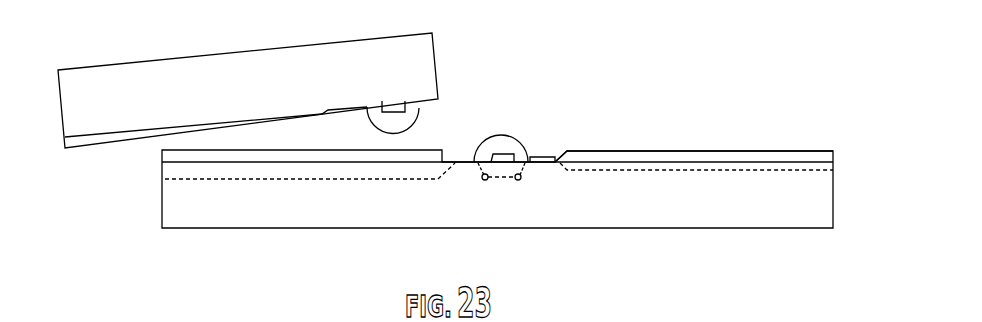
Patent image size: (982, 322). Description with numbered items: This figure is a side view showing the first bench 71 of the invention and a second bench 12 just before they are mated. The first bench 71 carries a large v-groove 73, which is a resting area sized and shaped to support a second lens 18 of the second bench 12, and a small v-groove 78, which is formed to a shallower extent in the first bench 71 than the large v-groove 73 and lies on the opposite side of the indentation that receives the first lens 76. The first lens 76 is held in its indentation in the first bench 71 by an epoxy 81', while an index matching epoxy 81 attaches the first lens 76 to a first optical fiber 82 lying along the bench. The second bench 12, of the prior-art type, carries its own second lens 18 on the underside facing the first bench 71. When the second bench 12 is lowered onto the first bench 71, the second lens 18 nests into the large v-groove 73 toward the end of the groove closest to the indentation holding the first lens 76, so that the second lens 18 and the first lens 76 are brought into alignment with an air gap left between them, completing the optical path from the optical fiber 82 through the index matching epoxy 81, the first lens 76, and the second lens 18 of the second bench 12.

The second bench 12 is at (151, 103).
The second lens 18 is at (413, 117).
The first bench 71 is at (634, 212).
The second large v-groove 73 is at (165, 178).
The first lens 76 is at (512, 142).
The first small v-groove 78 is at (833, 163).
The index matching epoxy 81 is at (566, 131).
The first optical fiber 82 is at (568, 152).
The epoxy 81' is at (506, 190).